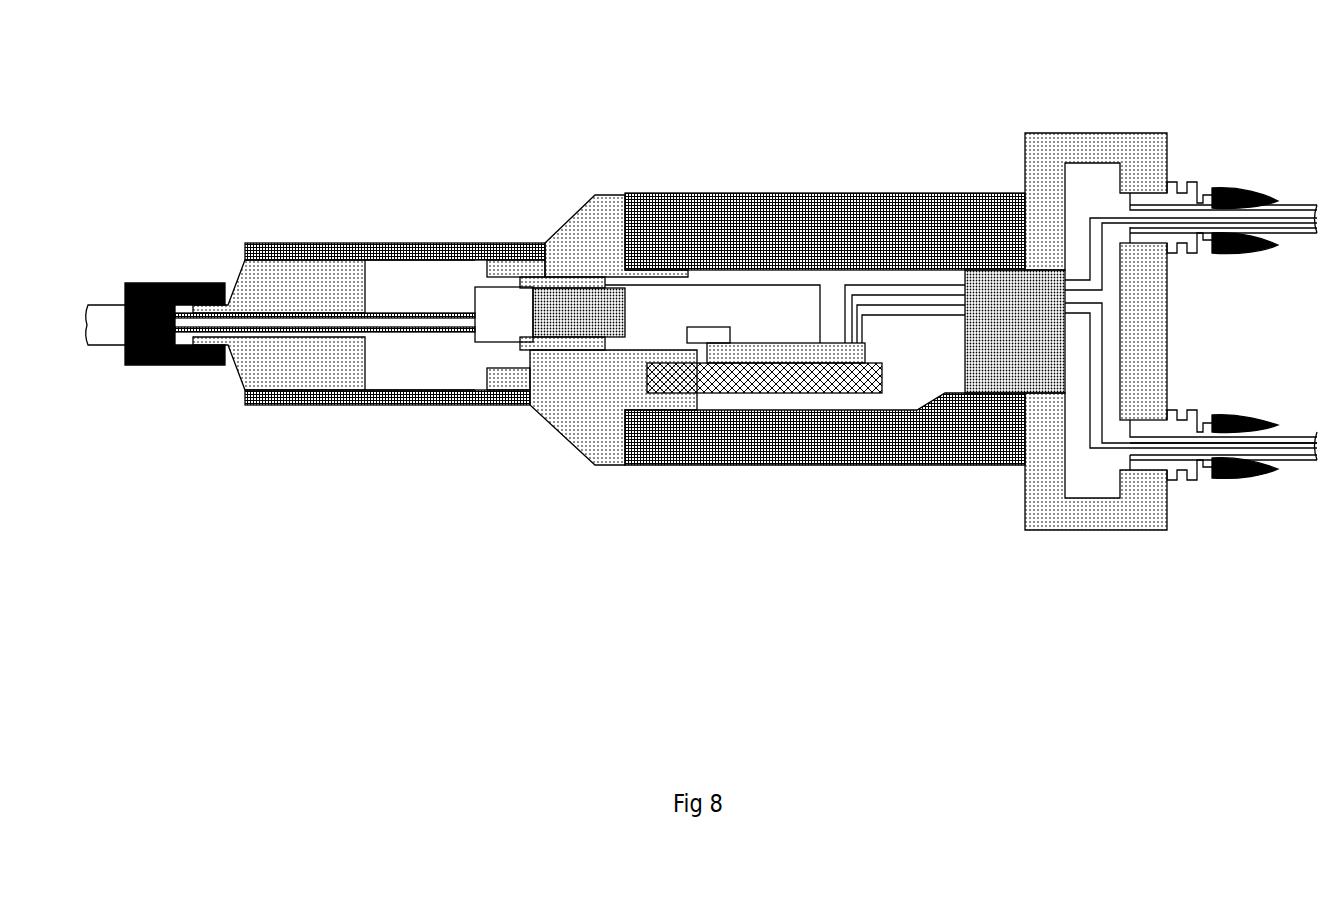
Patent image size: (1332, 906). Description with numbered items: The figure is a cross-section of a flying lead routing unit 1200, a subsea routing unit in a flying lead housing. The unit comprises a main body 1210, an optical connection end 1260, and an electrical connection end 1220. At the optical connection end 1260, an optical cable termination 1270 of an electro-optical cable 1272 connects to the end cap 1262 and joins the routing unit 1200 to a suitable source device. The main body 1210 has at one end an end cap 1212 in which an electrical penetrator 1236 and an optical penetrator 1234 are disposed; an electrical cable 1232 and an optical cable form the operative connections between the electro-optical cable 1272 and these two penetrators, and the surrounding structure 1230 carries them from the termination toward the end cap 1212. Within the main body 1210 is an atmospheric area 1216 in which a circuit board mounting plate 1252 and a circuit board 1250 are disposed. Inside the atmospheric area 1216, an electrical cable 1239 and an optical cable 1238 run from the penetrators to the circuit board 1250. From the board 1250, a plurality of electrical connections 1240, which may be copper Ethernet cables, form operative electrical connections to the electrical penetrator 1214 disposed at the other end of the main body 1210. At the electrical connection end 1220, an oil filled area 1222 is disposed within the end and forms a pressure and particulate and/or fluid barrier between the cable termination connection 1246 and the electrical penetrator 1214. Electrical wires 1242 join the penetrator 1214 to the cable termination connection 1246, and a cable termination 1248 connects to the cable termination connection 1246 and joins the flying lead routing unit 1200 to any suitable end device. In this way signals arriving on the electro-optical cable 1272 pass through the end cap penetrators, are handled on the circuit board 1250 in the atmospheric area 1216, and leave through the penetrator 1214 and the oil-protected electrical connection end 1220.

The flying lead routing unit 1200 is at (292, 573).
The main body 1210 is at (768, 228).
The end cap 1212 is at (585, 232).
The electrical penetrator 1214 is at (998, 360).
The atmospheric area 1216 is at (905, 373).
The electrical connection end 1220 is at (1080, 133).
The oil filled area 1222 is at (1103, 477).
The shaft 1230 is at (430, 316).
The electrical cable 1232 is at (395, 330).
The optical penetrator 1234 is at (533, 290).
The electrical penetrator 1236 is at (568, 348).
The optical cable 1238 is at (713, 282).
The electrical cable 1239 is at (682, 335).
The electrical connections 1240 is at (903, 295).
The electrical wires 1242 is at (1110, 210).
The cable termination connection 1246 is at (1190, 183).
The cable termination 1248 is at (1250, 192).
The circuit board 1250 is at (792, 355).
The circuit board mounting plate 1252 is at (697, 395).
The optical connection end 1260 is at (475, 245).
The end cap 1262 is at (303, 275).
The optical cable termination 1270 is at (148, 283).
The electro-optical cable 1272 is at (88, 343).